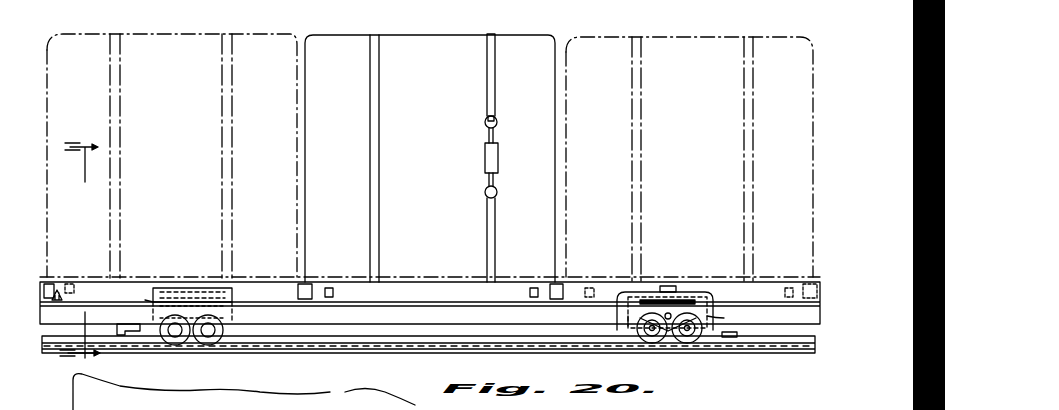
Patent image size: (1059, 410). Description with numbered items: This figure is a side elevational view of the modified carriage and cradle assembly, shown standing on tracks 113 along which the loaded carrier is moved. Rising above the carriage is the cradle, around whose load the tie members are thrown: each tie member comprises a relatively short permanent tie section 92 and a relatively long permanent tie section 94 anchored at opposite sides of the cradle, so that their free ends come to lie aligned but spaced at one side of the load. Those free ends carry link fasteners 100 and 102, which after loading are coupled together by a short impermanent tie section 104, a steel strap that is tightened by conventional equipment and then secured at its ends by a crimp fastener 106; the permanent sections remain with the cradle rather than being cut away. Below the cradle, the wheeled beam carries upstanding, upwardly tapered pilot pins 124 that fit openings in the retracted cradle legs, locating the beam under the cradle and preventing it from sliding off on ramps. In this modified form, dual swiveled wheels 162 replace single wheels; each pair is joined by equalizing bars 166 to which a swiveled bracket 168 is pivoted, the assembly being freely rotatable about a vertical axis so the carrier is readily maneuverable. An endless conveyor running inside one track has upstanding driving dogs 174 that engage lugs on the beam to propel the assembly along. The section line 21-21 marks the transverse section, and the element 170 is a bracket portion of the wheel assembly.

The section line 21- 21 is at (100, 258).
The permanent tie section 92 is at (497, 236).
The permanent tie section 94 is at (497, 86).
The link fastener 100 is at (484, 192).
The link fastener 102 is at (484, 122).
The impermanent tie section 104 is at (496, 132).
The crimp fastener 106 is at (484, 159).
The track 113 is at (382, 352).
The pilot pin 124 is at (58, 292).
The dual swiveled wheel 162 is at (190, 340).
The equalizing bar 166 is at (236, 313).
The swiveled bracket 168 is at (215, 290).
The trolley bracket 170 is at (145, 300).
The driving dog 174 is at (120, 332).